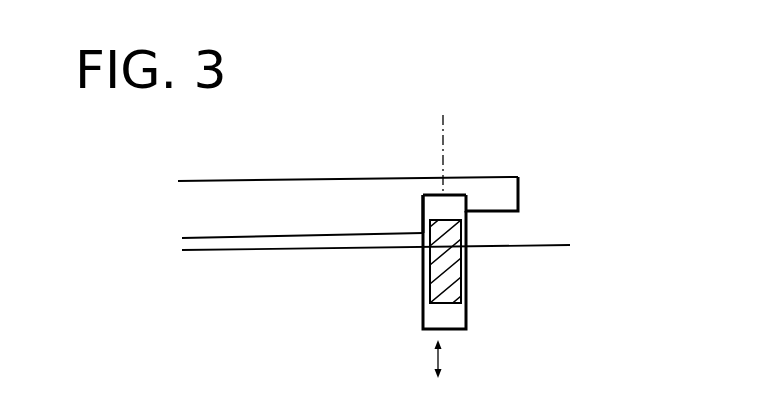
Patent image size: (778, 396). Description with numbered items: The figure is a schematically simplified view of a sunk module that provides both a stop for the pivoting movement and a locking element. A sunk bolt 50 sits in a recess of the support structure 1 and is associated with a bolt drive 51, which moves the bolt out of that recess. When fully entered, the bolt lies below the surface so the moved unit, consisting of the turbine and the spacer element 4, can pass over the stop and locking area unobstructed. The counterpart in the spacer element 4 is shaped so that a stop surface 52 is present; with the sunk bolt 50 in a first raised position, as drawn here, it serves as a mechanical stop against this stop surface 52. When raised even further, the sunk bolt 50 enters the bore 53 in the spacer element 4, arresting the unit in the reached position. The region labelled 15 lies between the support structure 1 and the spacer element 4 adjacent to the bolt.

The support structure 1 is at (313, 306).
The spacer element 4 is at (323, 220).
The recess 15 is at (508, 240).
The sunk bolt 50 is at (452, 282).
The bolt drive 51 is at (450, 358).
The stop surface 52 is at (423, 233).
The bore 53 is at (445, 190).